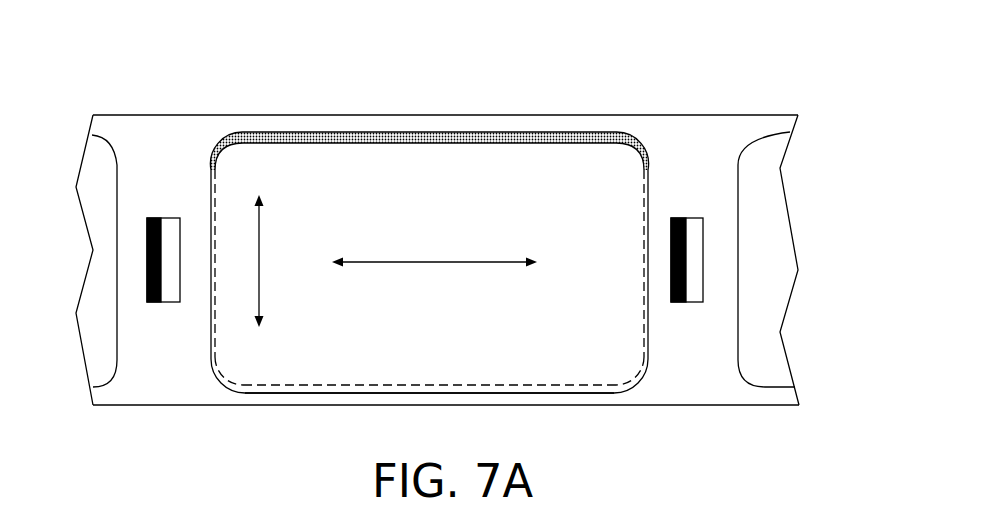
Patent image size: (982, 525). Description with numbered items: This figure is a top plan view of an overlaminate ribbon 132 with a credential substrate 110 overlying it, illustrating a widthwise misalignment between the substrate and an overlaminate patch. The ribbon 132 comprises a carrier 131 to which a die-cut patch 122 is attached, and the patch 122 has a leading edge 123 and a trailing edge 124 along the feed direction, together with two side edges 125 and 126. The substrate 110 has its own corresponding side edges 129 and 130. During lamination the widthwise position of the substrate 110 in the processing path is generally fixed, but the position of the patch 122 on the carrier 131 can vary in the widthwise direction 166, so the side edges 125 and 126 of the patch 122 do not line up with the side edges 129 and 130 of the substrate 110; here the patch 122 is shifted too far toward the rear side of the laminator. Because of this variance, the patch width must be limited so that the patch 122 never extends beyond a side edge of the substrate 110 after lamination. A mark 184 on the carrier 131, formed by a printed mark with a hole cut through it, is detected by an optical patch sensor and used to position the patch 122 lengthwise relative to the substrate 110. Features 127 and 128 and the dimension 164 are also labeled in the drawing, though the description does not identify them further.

The credential substrate 110 is at (612, 372).
The patch 122 is at (362, 132).
The leading edge 123 is at (209, 179).
The trailing edge 124 is at (647, 182).
The side edge of patch 125 is at (461, 121).
The side edge of patch 126 is at (544, 405).
The first bottom corner of opening 127 is at (210, 347).
The second bottom corner of opening 128 is at (648, 347).
The side edge of substrate 129 is at (571, 126).
The side edge of substrate 130 is at (295, 410).
The carrier 131 is at (177, 114).
The overlaminate ribbon 132 is at (748, 58).
The width dimension 164 is at (440, 263).
The widthwise direction 166 is at (260, 250).
The mark 184 is at (125, 243).